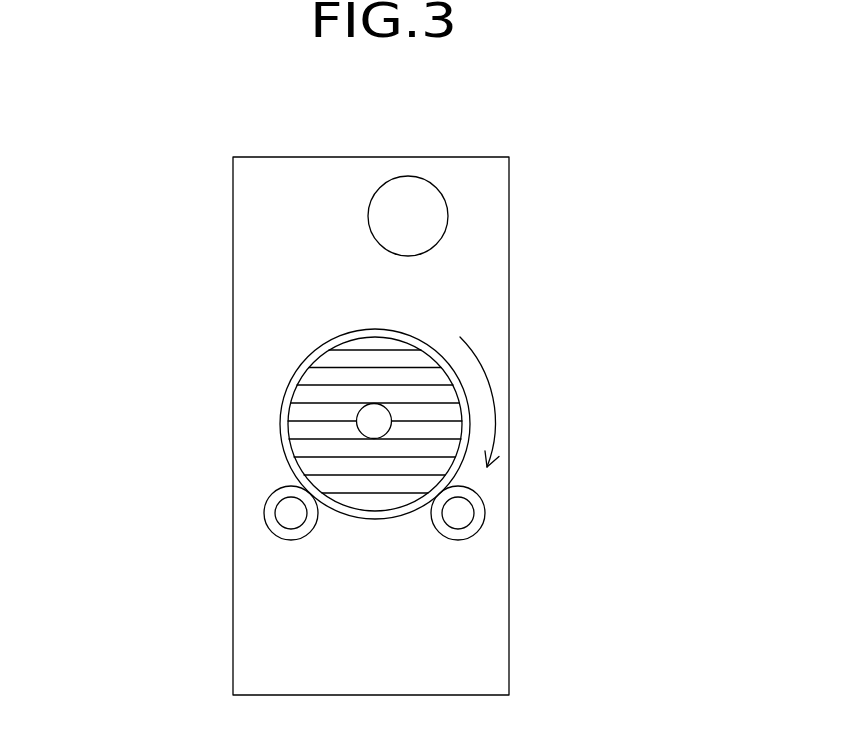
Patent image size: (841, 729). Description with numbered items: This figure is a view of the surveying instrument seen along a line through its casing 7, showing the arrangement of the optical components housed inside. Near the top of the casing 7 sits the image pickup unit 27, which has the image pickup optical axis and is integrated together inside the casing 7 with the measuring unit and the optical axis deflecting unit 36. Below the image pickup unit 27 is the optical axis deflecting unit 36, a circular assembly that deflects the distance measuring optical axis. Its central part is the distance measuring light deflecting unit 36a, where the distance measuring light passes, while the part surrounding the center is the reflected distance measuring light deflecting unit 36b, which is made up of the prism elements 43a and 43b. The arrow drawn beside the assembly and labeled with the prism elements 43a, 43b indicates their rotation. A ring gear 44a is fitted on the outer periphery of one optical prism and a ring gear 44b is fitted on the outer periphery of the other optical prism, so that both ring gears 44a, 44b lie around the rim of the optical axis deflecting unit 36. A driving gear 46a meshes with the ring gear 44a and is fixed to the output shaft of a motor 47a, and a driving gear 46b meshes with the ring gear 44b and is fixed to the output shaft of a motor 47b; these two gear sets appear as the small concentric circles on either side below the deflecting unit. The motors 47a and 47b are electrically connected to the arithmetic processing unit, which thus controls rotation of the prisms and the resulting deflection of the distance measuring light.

The casing 7 is at (509, 207).
The image pickup unit 27 is at (421, 177).
The optical axis deflecting unit 36 is at (266, 470).
The distance measuring light deflecting unit 36a is at (358, 412).
The reflected distance measuring light deflecting unit 36b is at (379, 487).
The prism element 43a is at (567, 402).
The prism element 43b is at (452, 376).
The ring gear 44a is at (264, 424).
The ring gear 44b is at (282, 428).
The driving gear 46a is at (483, 523).
The driving gear 46b is at (265, 512).
The motor 47a is at (472, 507).
The motor 47b is at (274, 503).